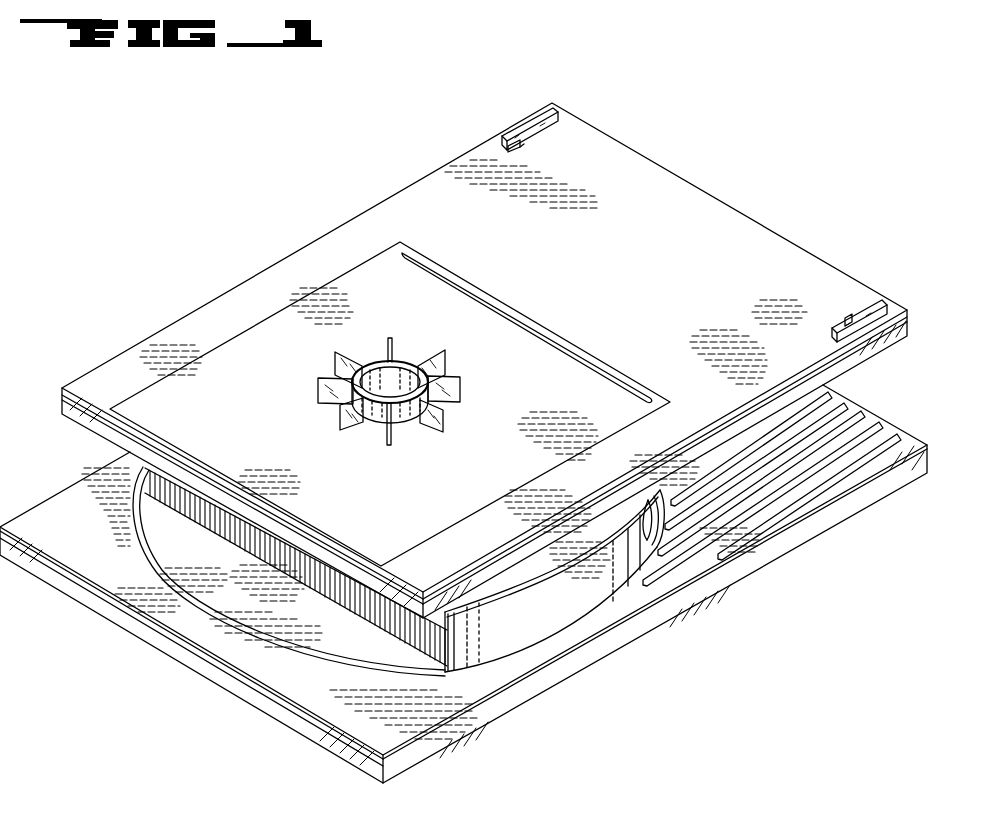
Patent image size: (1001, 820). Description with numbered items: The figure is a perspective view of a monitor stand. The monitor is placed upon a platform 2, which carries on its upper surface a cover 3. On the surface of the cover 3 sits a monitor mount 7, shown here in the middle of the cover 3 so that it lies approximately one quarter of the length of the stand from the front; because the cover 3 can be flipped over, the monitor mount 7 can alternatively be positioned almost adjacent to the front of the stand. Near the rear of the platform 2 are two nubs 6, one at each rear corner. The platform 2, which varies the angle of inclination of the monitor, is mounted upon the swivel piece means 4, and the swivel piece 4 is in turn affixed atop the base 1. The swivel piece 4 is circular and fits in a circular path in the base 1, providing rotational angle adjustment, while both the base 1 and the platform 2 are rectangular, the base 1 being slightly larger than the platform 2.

The base 1 is at (295, 683).
The platform 2 is at (385, 228).
The cover 3 is at (168, 412).
The swivel piece means 4 is at (525, 632).
The nubs 6 is at (543, 128).
The monitor mount 7 is at (330, 380).